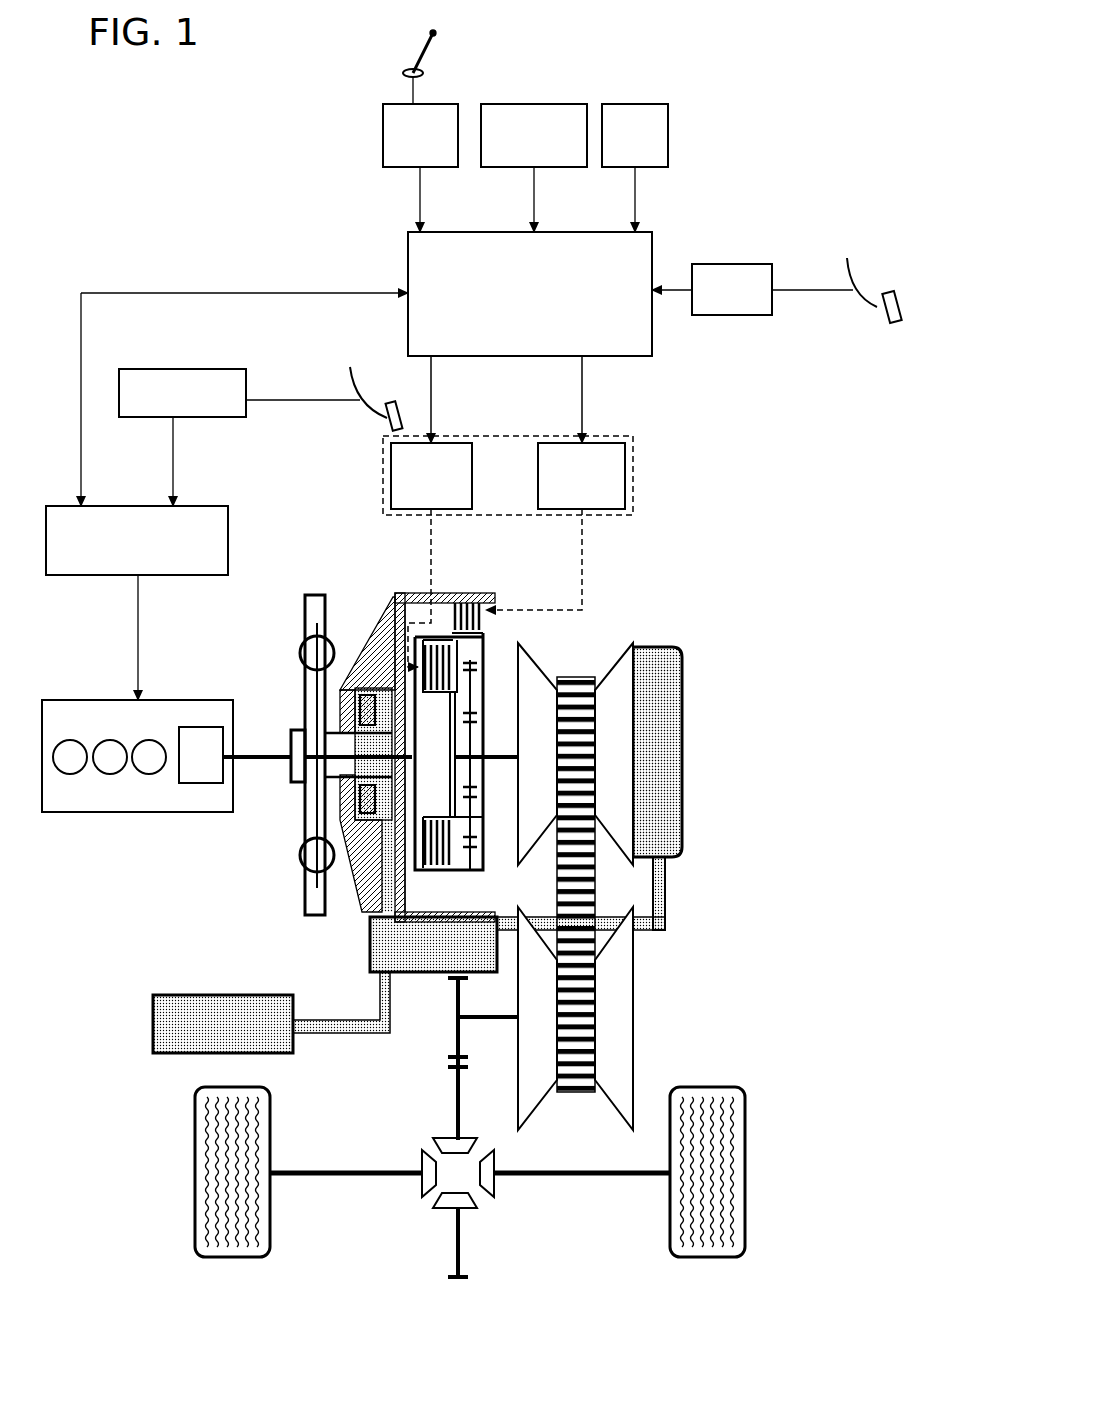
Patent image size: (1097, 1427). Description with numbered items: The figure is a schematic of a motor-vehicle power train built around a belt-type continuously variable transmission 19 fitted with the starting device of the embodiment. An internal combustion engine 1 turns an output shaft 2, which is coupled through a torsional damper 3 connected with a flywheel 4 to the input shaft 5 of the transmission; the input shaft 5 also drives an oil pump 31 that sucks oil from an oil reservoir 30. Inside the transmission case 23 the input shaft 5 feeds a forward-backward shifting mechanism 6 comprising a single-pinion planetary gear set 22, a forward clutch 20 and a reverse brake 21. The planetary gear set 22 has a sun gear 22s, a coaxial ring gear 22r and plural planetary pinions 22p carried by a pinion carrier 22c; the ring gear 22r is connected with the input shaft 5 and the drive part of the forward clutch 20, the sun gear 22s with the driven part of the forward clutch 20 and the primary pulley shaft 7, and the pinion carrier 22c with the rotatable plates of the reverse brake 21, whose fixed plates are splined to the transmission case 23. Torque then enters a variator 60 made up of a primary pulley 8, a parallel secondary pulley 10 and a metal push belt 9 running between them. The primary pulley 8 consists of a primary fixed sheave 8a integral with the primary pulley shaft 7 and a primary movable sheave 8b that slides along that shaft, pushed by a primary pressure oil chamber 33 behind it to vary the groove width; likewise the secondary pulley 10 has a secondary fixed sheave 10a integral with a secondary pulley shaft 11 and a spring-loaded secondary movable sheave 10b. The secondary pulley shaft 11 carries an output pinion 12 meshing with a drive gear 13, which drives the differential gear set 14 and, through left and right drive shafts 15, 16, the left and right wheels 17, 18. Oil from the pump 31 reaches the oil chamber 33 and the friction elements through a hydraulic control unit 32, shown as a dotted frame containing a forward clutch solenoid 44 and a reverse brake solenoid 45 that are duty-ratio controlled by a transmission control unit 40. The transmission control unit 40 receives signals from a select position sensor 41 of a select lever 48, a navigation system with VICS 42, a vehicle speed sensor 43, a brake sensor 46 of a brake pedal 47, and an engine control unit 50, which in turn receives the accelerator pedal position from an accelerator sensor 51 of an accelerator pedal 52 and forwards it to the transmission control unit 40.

The internal combustion engine 1 is at (60, 700).
The output shaft 2 is at (250, 756).
The torsional damper 3 is at (318, 595).
The flywheel 4 is at (380, 633).
The input shaft 5 is at (332, 700).
The forward-backward shifting mechanism 6 is at (463, 592).
The primary pulley shaft 7 is at (477, 752).
The primary pulley 8 is at (583, 713).
The primary fixed sheave 8a is at (537, 664).
The primary movable sheave 8b is at (630, 643).
The metal push belt 9 is at (596, 875).
The secondary pulley 10 is at (620, 1036).
The secondary fixed sheave 10a is at (617, 1110).
The secondary movable sheave 10b is at (535, 1110).
The secondary pulley shaft 11 is at (492, 1022).
The output pinion 12 is at (448, 1057).
The drive gear 13 is at (452, 1117).
The differential gear set 14 is at (436, 1211).
The left drive shaft 15 is at (308, 1168).
The right drive shaft 16 is at (577, 1178).
The left wheel 17 is at (195, 1240).
The right wheel 18 is at (745, 1245).
The continuously variable transmission 19 is at (706, 657).
The forward clutch 20 is at (436, 692).
The reverse brake 21 is at (490, 614).
The planetary gear set 22 is at (488, 698).
The sun gear 22s is at (470, 770).
The planetary pinions 22p is at (470, 853).
The ring gear 22r is at (470, 807).
The pinion carrier 22c is at (487, 872).
The transmission case 23 is at (413, 593).
The oil reservoir 30 is at (188, 995).
The oil pump 31 is at (373, 862).
The hydraulic control unit 32 is at (427, 977).
The primary pressure oil chamber 33 is at (660, 720).
The transmission control unit 40 is at (652, 232).
The select position sensor 41 is at (438, 104).
The navigation system with VICS 42 is at (542, 104).
The vehicle speed sensor 43 is at (669, 116).
The forward clutch solenoid 44 is at (460, 443).
The reverse brake solenoid 45 is at (615, 443).
The brake sensor 46 is at (735, 264).
The brake pedal 47 is at (872, 307).
The select lever 48 is at (420, 55).
The engine control unit 50 is at (190, 578).
The accelerator sensor 51 is at (182, 369).
The accelerator pedal 52 is at (363, 412).
The variator 60 is at (668, 962).